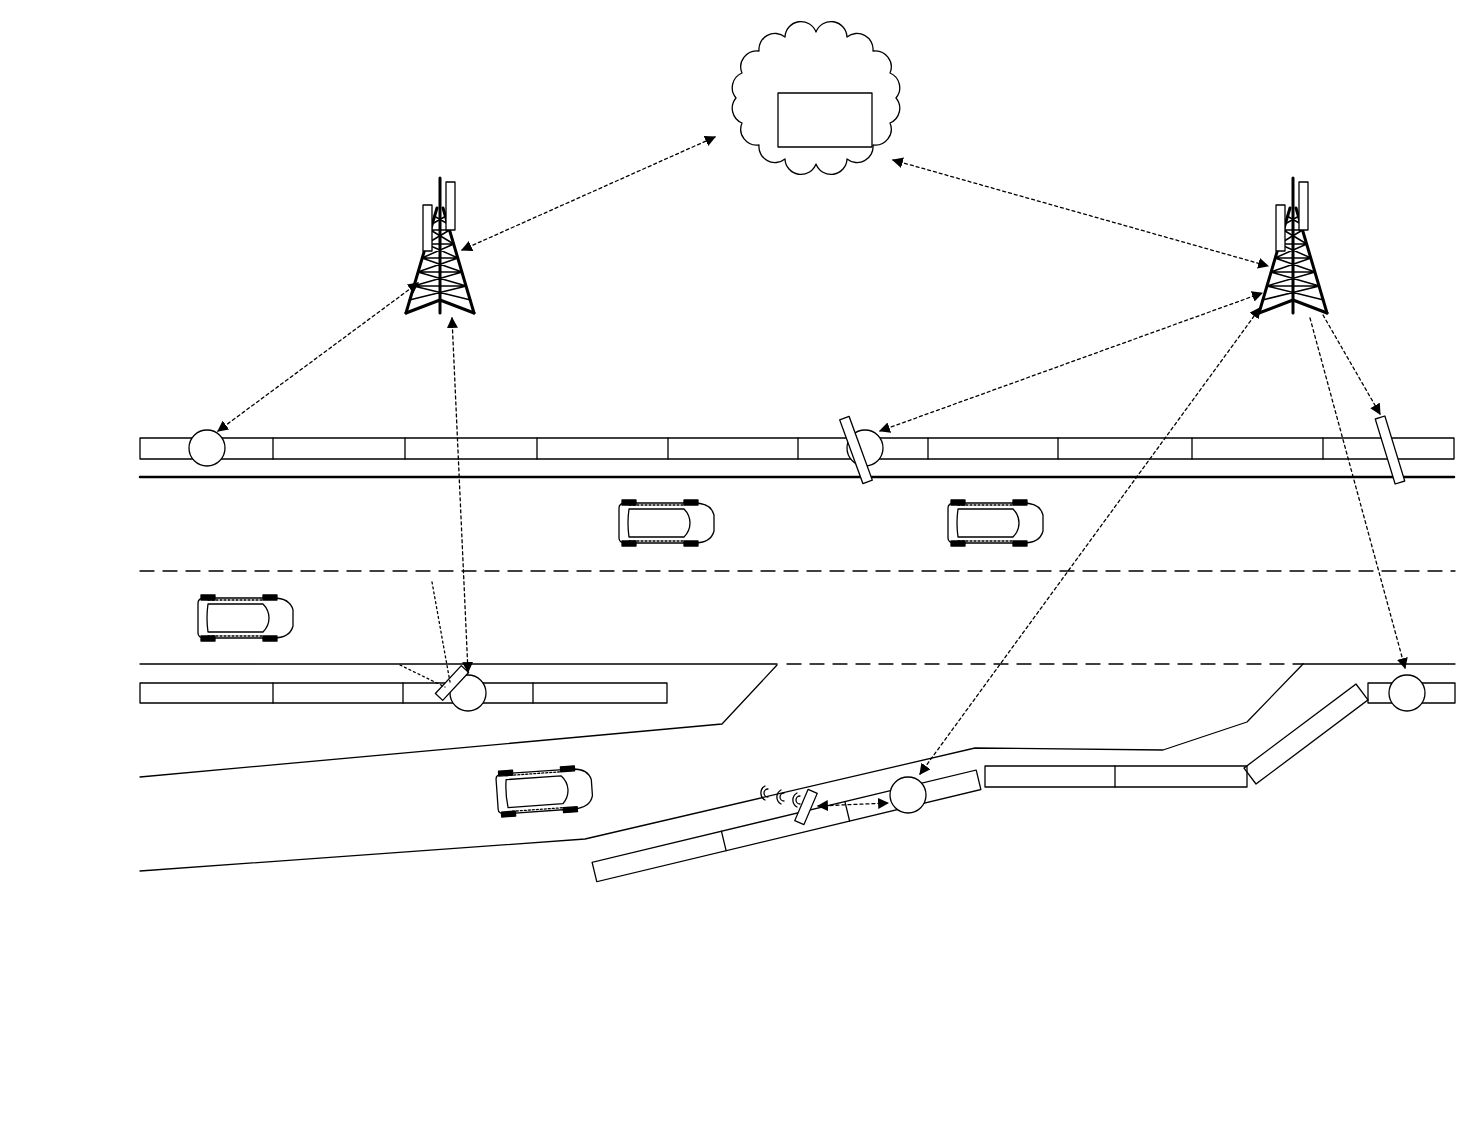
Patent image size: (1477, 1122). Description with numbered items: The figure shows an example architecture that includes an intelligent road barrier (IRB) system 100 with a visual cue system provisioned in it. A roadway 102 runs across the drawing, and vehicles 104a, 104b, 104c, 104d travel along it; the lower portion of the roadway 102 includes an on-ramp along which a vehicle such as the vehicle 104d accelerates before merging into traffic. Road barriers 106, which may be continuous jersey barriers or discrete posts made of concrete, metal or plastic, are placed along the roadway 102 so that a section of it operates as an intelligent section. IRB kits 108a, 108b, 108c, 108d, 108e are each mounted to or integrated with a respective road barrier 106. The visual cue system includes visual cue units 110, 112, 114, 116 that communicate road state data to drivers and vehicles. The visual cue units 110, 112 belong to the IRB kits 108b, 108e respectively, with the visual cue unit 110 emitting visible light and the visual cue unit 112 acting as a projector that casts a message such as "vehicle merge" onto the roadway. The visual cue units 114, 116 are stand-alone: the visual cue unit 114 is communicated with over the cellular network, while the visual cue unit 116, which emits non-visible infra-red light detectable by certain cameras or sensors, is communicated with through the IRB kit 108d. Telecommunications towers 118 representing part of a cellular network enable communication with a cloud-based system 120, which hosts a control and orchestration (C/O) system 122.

The IRB system 100 is at (270, 184).
The roadway 102 is at (243, 537).
The vehicle 104a is at (198, 618).
The vehicle 104b is at (618, 521).
The vehicle 104c is at (948, 521).
The vehicle 104d is at (497, 793).
The road barrier 106 is at (515, 438).
The IRB kit 108a is at (207, 430).
The IRB kit 108b is at (872, 430).
The IRB kit 108c is at (1405, 712).
The IRB kit 108d is at (905, 814).
The IRB kit 108e is at (484, 678).
The visual cue unit 110 is at (846, 418).
The visual cue unit 112 is at (440, 697).
The visual cue unit 114 is at (1393, 420).
The visual cue unit 116 is at (812, 793).
The telecommunications tower 118 is at (476, 292).
The cloud-based system 120 is at (866, 98).
The control and orchestration (C/O) system 122 is at (872, 120).